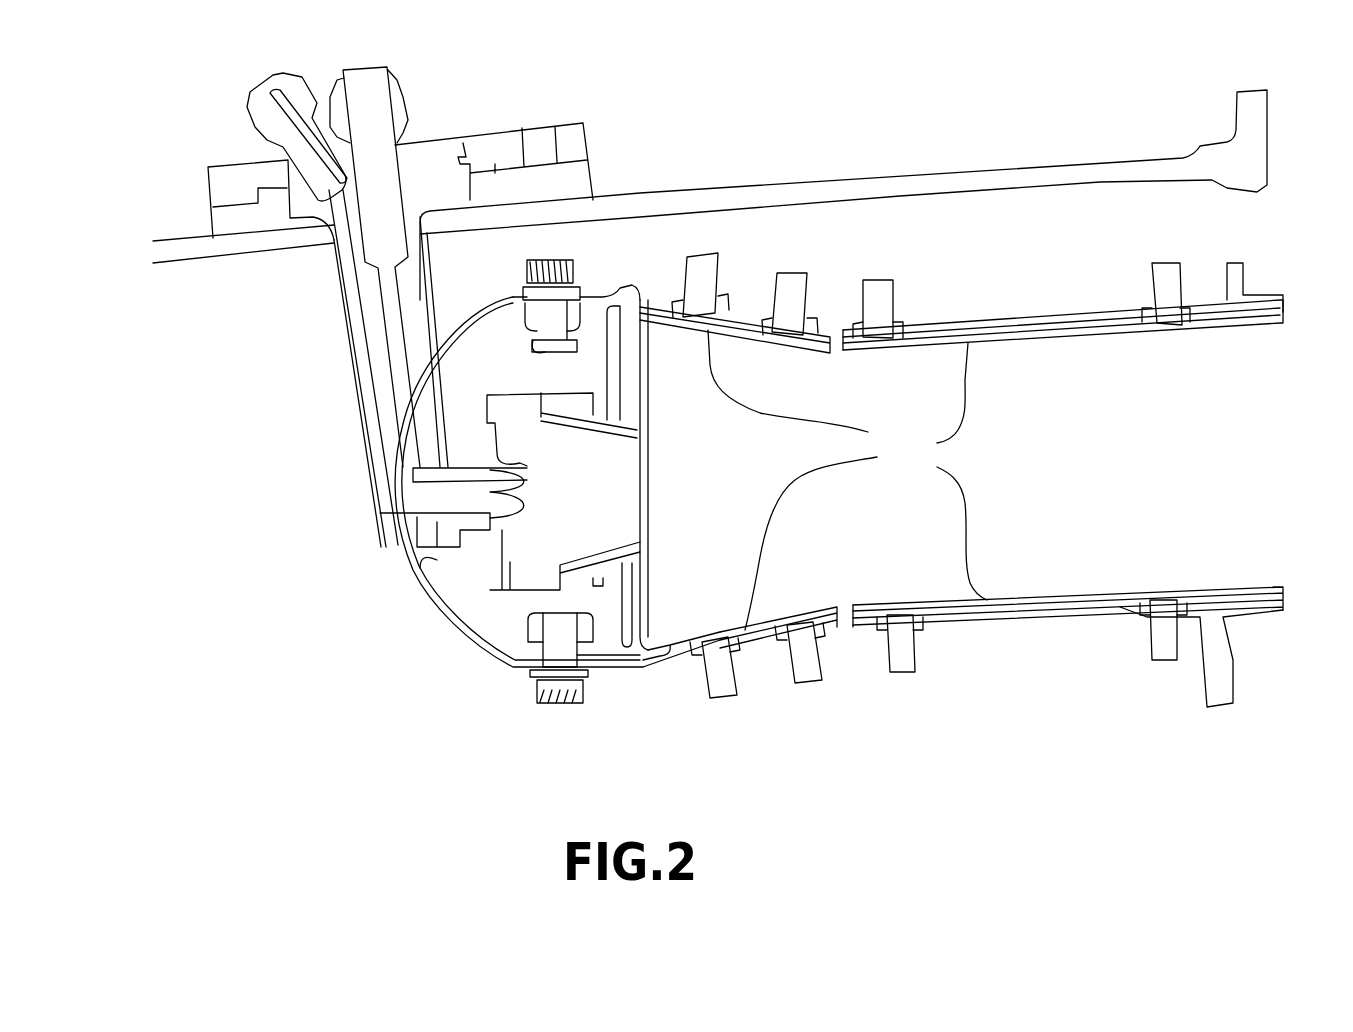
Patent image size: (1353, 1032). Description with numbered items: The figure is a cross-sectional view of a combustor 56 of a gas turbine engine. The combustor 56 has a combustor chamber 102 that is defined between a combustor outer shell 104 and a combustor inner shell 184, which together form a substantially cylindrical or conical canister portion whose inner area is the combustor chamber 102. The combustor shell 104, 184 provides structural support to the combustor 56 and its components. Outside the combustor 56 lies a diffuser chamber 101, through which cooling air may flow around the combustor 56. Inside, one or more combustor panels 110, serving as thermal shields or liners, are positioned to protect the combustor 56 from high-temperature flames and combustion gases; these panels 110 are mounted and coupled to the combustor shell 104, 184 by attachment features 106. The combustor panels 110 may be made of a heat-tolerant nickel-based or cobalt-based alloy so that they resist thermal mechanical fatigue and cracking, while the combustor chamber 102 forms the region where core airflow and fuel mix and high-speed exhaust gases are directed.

The combustor 56 is at (1093, 206).
The diffuser chamber 101 is at (985, 249).
The combustor chamber 102 is at (1128, 472).
The combustor outer shell 104 is at (1043, 318).
The attachment features 106 is at (723, 285).
The combustor panels 110 is at (847, 480).
The combustor inner shell 184 is at (1030, 617).